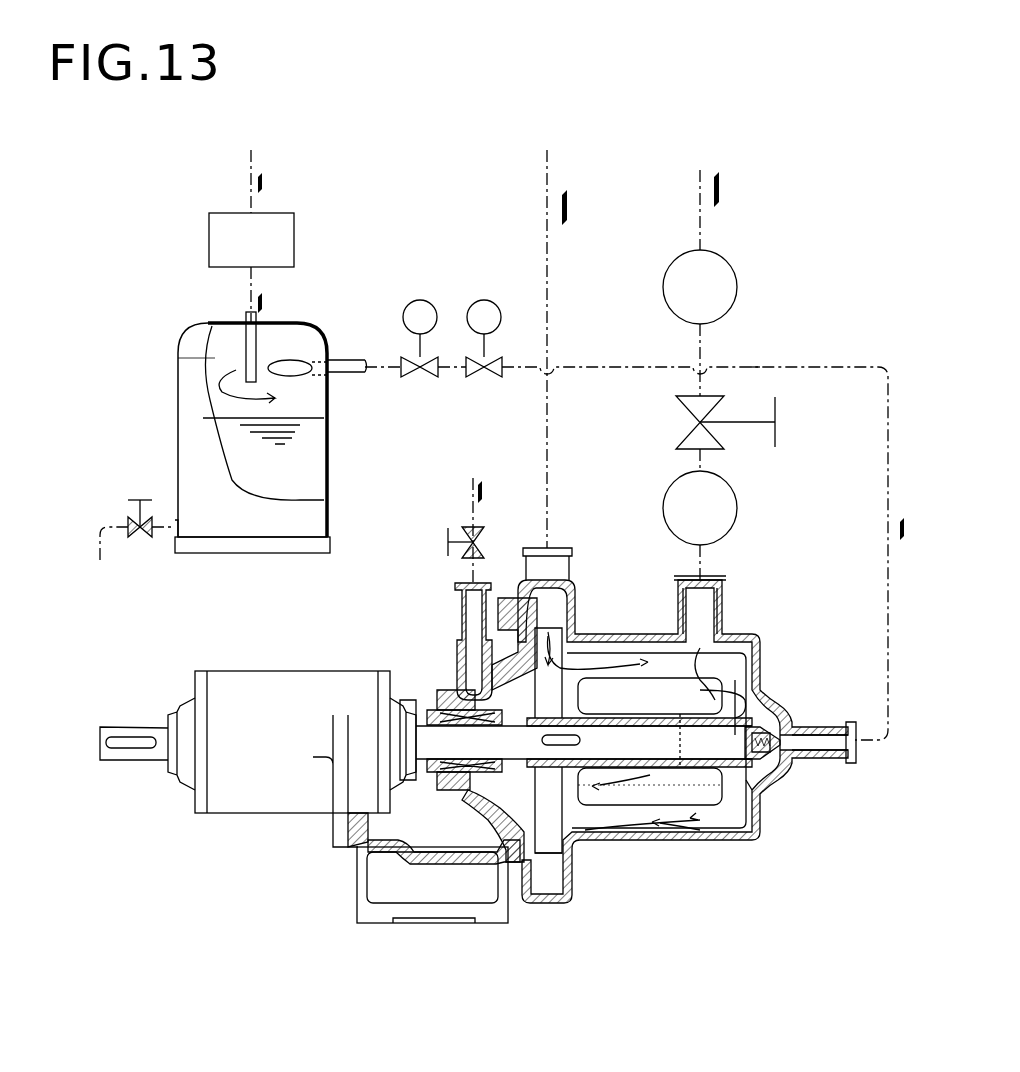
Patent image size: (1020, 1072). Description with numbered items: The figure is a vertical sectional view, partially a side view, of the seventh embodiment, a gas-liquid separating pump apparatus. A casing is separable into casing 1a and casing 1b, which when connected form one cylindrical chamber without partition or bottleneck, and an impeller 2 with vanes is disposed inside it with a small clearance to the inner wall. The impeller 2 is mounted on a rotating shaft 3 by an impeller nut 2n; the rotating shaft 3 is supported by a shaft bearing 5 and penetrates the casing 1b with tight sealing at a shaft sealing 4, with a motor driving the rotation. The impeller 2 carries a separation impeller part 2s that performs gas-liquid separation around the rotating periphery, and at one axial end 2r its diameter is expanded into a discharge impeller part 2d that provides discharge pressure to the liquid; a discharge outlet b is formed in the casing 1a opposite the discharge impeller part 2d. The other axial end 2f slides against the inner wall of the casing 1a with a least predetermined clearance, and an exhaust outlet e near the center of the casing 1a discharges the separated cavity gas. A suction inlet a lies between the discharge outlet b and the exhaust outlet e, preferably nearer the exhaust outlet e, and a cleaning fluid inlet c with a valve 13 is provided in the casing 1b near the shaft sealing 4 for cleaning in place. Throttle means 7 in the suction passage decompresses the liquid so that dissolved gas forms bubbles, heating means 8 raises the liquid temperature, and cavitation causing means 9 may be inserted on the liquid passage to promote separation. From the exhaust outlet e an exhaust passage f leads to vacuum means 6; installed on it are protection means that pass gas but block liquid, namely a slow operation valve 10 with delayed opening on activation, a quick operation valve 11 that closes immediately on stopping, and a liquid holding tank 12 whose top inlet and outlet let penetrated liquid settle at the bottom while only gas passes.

The casing 1a is at (690, 840).
The casing 1b is at (465, 742).
The impeller 2 is at (568, 812).
The discharge impeller part 2d is at (550, 850).
The one axial end 2r is at (520, 770).
The separation impeller part 2s is at (625, 797).
The other axial end 2f is at (758, 805).
The impeller nut 2n is at (778, 780).
The rotating shaft 3 is at (358, 835).
The shaft sealing 4 is at (440, 770).
The shaft bearing 5 is at (300, 813).
The vacuum means 6 is at (209, 232).
The throttle means 7 is at (742, 420).
The heating means 8 is at (737, 280).
The cavitation causing means 9 is at (737, 500).
The slow operation valve 10 is at (490, 360).
The quick operation valve 11 is at (425, 360).
The liquid holding tank 12 is at (180, 340).
The valve 13 is at (462, 535).
The suction inlet a is at (705, 606).
The discharge outlet b is at (555, 572).
The cleaning fluid inlet c is at (470, 614).
The exhaust outlet e is at (822, 738).
The exhaust passage f is at (752, 367).